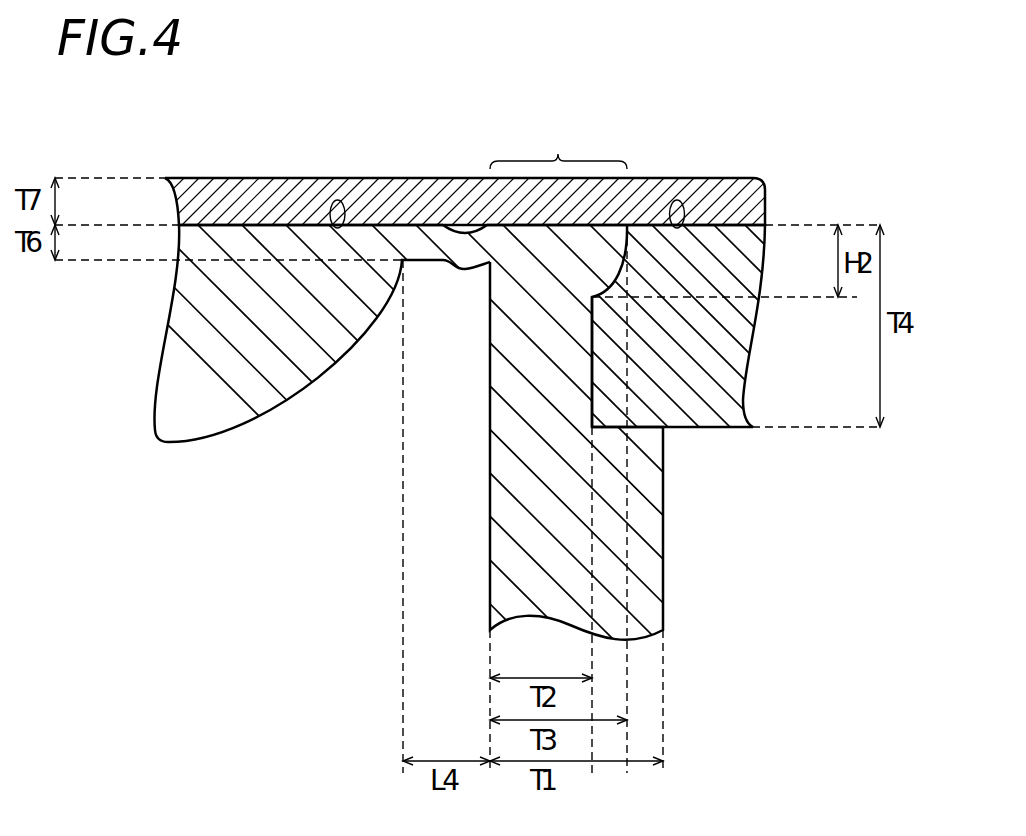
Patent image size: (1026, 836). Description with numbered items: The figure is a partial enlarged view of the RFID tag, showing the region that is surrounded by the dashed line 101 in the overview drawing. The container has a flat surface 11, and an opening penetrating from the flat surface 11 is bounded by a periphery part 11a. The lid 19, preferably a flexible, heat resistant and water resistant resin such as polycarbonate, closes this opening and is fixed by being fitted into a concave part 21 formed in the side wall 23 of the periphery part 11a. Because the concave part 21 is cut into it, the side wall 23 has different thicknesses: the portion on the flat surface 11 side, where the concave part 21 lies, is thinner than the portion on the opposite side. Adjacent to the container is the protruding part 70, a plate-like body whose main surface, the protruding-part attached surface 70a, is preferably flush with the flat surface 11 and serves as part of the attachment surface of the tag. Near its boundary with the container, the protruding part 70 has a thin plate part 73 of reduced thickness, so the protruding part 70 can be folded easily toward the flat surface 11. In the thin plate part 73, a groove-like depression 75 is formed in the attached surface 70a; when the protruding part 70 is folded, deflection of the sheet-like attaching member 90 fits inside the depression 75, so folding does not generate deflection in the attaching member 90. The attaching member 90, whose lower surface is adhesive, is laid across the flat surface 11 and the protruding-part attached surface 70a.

The dashed line 101 is at (818, 35).
The protruding-part attached surface 70a is at (337, 218).
The depression 75 is at (466, 222).
The periphery part 11a is at (558, 145).
The flat surface 11 is at (677, 218).
The attaching member 90 is at (750, 200).
The lid 19 is at (747, 263).
The concave part 21 is at (604, 360).
The side wall 23 is at (648, 522).
The protruding part 70 is at (197, 423).
The thin plate part 73 is at (458, 270).